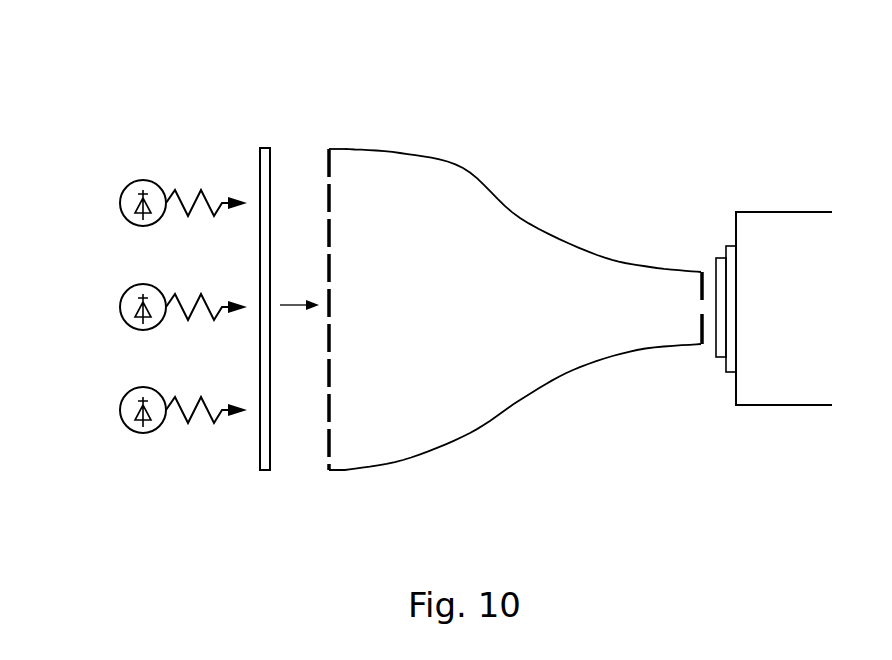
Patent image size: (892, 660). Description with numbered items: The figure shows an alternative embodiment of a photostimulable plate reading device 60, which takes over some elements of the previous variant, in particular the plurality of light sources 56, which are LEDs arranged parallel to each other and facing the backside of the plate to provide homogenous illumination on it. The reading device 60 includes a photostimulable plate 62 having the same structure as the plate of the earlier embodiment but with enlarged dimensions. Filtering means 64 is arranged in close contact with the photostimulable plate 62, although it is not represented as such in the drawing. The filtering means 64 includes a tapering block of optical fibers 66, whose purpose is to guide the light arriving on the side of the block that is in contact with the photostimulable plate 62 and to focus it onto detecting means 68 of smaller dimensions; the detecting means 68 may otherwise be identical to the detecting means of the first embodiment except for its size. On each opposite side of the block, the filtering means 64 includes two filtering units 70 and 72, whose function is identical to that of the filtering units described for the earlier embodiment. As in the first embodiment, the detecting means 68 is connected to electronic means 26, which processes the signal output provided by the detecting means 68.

The electronic means 26 is at (775, 406).
The light sources 56 is at (122, 215).
The photostimulable plate reading device 60 is at (311, 82).
The photostimulable plate 62 is at (252, 152).
The filtering means 64 is at (515, 292).
The tapering block of optical fibers 66 is at (526, 212).
The detecting means 68 is at (718, 240).
The filtering unit 70 is at (326, 490).
The filtering unit 72 is at (699, 373).